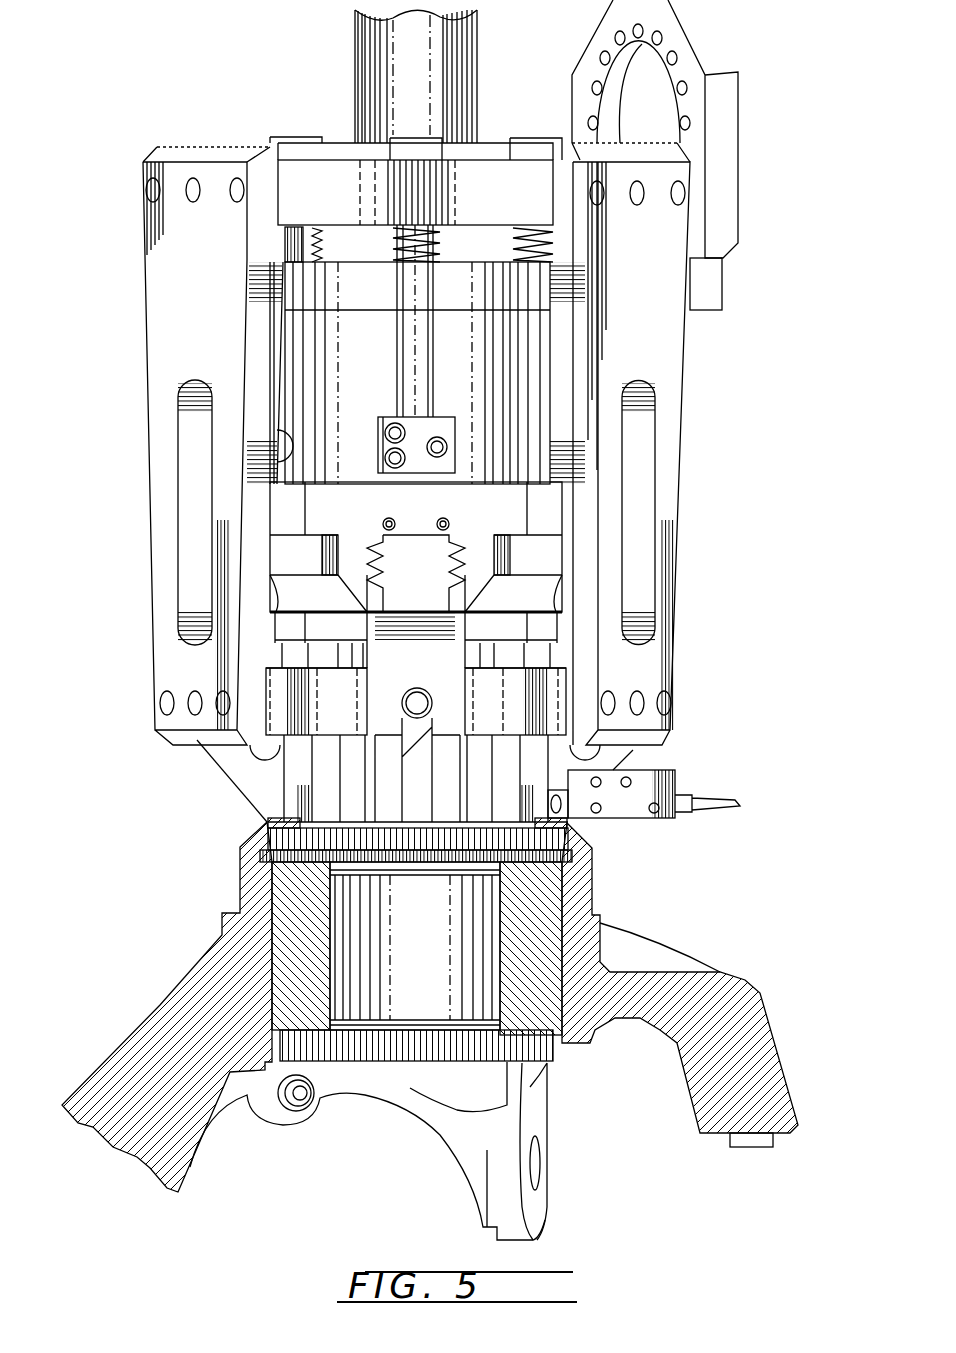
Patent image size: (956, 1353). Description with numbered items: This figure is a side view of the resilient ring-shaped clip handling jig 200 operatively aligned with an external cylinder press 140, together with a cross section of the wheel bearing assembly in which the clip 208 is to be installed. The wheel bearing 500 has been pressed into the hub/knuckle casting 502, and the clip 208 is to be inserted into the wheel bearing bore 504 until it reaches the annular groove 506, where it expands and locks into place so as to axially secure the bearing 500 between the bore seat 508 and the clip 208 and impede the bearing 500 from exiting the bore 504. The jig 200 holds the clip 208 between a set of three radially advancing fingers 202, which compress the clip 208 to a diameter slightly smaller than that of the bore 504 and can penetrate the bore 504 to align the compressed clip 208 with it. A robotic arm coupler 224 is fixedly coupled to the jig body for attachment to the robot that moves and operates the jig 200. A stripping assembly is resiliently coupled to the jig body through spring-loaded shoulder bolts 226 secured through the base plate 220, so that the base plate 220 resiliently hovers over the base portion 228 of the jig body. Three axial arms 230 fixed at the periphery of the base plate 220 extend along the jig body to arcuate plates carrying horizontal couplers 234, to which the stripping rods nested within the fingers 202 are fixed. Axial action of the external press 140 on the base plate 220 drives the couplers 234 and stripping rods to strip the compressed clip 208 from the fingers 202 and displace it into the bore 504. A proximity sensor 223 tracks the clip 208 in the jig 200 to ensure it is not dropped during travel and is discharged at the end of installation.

The external cylinder press 140 is at (442, 50).
The handling jig 200 is at (728, 384).
The fingers 202 is at (400, 663).
The clip 208 is at (573, 827).
The base plate 220 is at (336, 142).
The proximity sensor 223 is at (653, 780).
The robotic arm coupler 224 is at (727, 120).
The spring-loaded shoulder bolts 226 is at (296, 136).
The base portion 228 is at (362, 258).
The axial arms 230 is at (653, 670).
The horizontal couplers 234 is at (397, 750).
The wheel bearing 500 is at (523, 933).
The hub/knuckle casting 502 is at (753, 993).
The wheel bearing bore 504 is at (270, 838).
The annular groove 506 is at (590, 857).
The bore seat 508 is at (283, 1013).